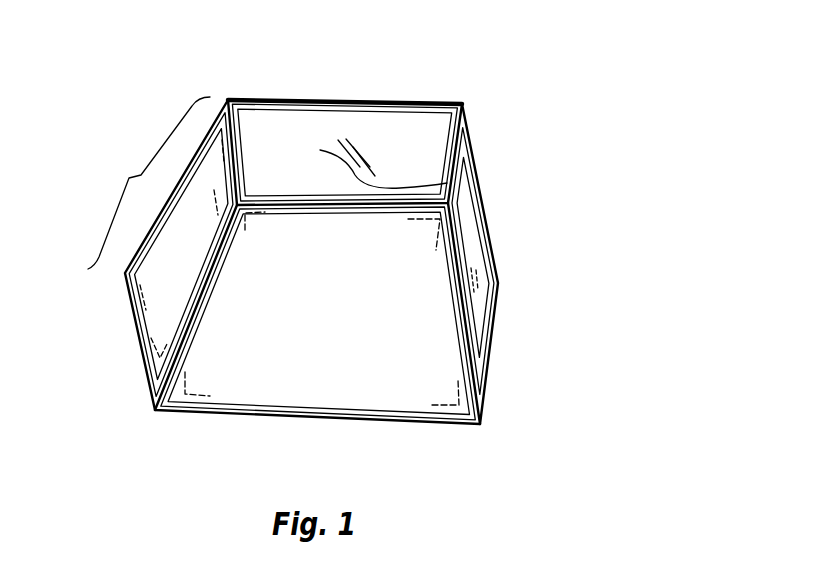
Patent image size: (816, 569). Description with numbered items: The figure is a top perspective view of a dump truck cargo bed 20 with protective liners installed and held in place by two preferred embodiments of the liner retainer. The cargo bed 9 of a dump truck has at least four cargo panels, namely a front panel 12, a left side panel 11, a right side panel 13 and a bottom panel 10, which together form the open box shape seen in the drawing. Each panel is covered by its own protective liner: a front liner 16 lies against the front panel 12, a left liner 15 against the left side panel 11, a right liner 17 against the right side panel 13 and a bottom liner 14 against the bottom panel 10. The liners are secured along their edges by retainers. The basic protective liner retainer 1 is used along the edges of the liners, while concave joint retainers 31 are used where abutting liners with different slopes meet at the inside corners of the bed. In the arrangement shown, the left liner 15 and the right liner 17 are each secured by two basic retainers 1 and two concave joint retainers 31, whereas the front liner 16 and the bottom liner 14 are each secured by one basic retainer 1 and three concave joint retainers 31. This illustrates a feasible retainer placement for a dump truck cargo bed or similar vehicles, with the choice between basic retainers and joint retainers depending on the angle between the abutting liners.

The protective liner retainer 1 is at (320, 104).
The cargo bed 9 is at (195, 245).
The bottom panel 10 is at (326, 258).
The left side panel 11 is at (160, 246).
The front panel 12 is at (384, 105).
The right side panel 13 is at (470, 255).
The bottom liner 14 is at (298, 322).
The left liner 15 is at (471, 261).
The front liner 16 is at (373, 138).
The right liner 17 is at (483, 302).
The dump truck cargo bed 20 is at (281, 100).
The concave joint retainer 31 is at (245, 148).